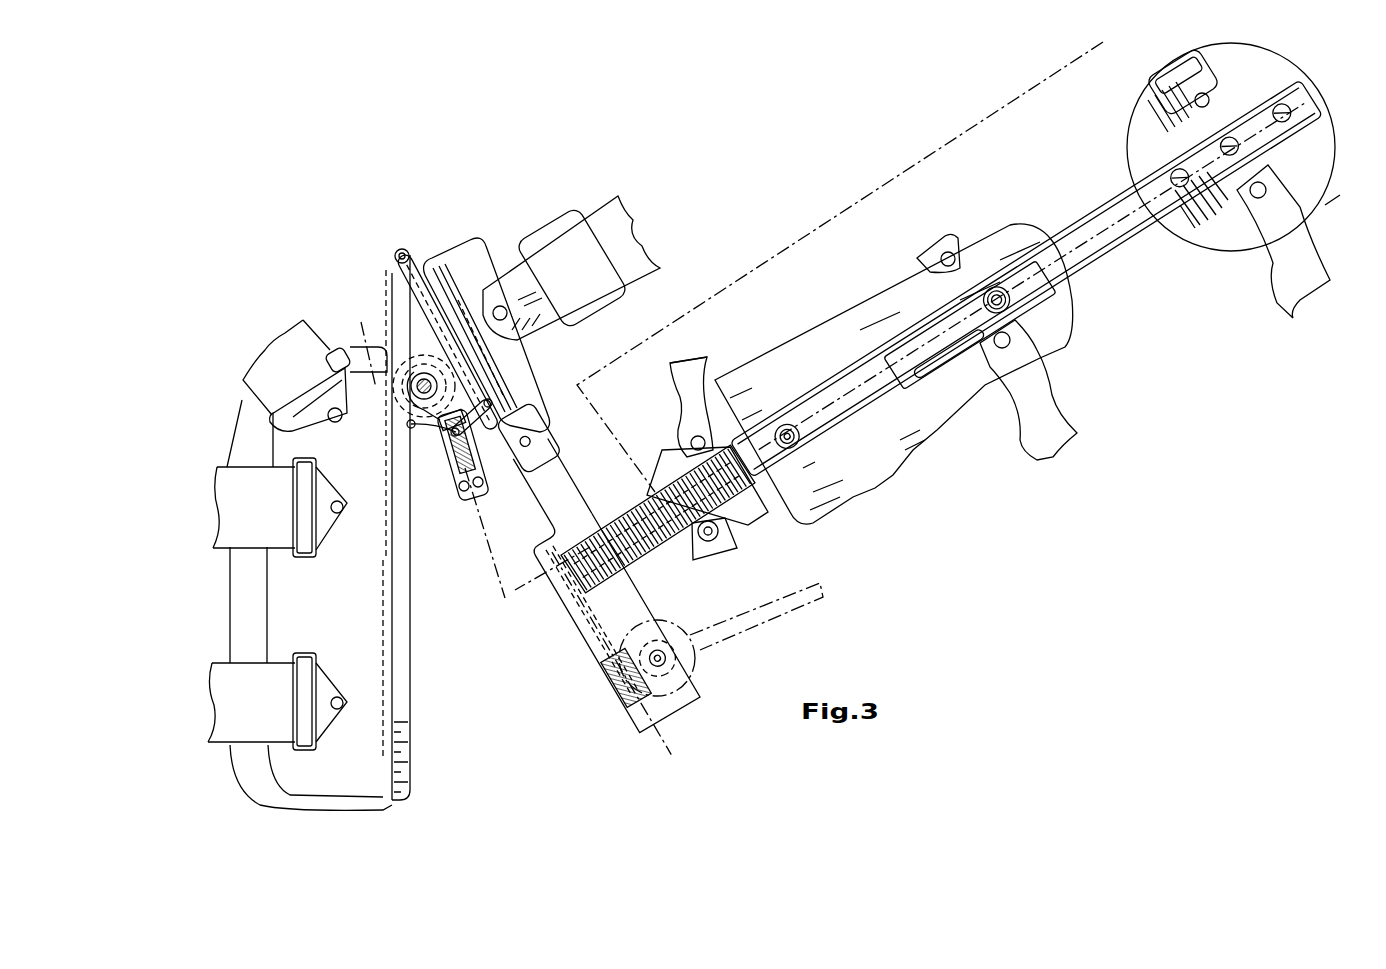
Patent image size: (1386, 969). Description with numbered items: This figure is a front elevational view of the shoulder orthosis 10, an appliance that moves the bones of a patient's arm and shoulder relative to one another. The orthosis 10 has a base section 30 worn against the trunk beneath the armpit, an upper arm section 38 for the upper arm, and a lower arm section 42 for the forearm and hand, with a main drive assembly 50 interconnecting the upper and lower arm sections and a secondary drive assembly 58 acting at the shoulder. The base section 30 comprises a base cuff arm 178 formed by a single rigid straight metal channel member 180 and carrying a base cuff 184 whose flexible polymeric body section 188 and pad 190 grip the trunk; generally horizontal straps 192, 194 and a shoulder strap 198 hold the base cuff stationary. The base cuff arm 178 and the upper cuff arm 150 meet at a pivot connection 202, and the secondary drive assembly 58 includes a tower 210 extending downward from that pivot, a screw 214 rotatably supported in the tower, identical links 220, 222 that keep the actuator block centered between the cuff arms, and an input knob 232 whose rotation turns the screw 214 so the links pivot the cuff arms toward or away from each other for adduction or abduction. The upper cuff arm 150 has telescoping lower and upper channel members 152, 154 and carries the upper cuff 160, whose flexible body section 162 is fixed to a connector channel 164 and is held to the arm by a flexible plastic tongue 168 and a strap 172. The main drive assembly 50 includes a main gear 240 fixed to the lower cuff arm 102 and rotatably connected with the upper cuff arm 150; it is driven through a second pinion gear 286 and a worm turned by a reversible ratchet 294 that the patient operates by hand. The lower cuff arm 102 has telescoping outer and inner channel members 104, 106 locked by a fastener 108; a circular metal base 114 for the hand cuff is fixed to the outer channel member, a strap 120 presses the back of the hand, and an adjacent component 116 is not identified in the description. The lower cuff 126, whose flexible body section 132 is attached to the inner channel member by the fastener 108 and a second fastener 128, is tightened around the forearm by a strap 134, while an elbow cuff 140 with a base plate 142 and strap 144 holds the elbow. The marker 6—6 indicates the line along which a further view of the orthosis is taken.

The section line 6- 6 is at (1103, 42).
The shoulder orthosis 10 is at (510, 128).
The base section 30 is at (315, 303).
The upper arm section 38 is at (540, 143).
The lower arm section 42 is at (1102, 353).
The main drive assembly 50 is at (727, 569).
The secondary drive assembly 58 is at (463, 508).
The lower cuff arm 102 is at (928, 378).
The outer channel member 104 is at (1046, 314).
The inner channel member 106 is at (845, 408).
The fastener 108 is at (1013, 300).
The circular metal base 114 is at (1143, 153).
The strap fastener 116 is at (1328, 205).
The strap 120 is at (1292, 278).
The lower cuff 126 is at (838, 308).
The second fastener 128 is at (782, 425).
The body section 132 is at (833, 352).
The strap 134 is at (1040, 417).
The elbow cuff 140 is at (672, 352).
The base plate 142 is at (663, 463).
The strap 144 is at (692, 370).
The upper cuff arm 150 is at (594, 553).
The lower channel member 152 is at (553, 500).
The upper channel member 154 is at (540, 385).
The upper cuff 160 is at (473, 288).
The body section 162 is at (466, 240).
The connector channel 164 is at (435, 298).
The flexible plastic tongue 168 is at (562, 215).
The strap 172 is at (625, 222).
The base cuff arm 178 is at (410, 795).
The channel member 180 is at (398, 745).
The base cuff 184 is at (236, 797).
The body section 188 is at (362, 777).
The pad 190 is at (208, 747).
The horizontal strap 192 is at (258, 540).
The horizontal strap 194 is at (250, 670).
The shoulder strap 198 is at (273, 390).
The pivot connection 202 is at (399, 250).
The tower 210 is at (445, 466).
The screw 214 is at (450, 447).
The link 220 is at (425, 428).
The link 222 is at (470, 392).
The knob 232 is at (365, 343).
The main gear 240 is at (650, 565).
The second pinion gear 286 is at (610, 690).
The reversible ratchet 294 is at (790, 615).